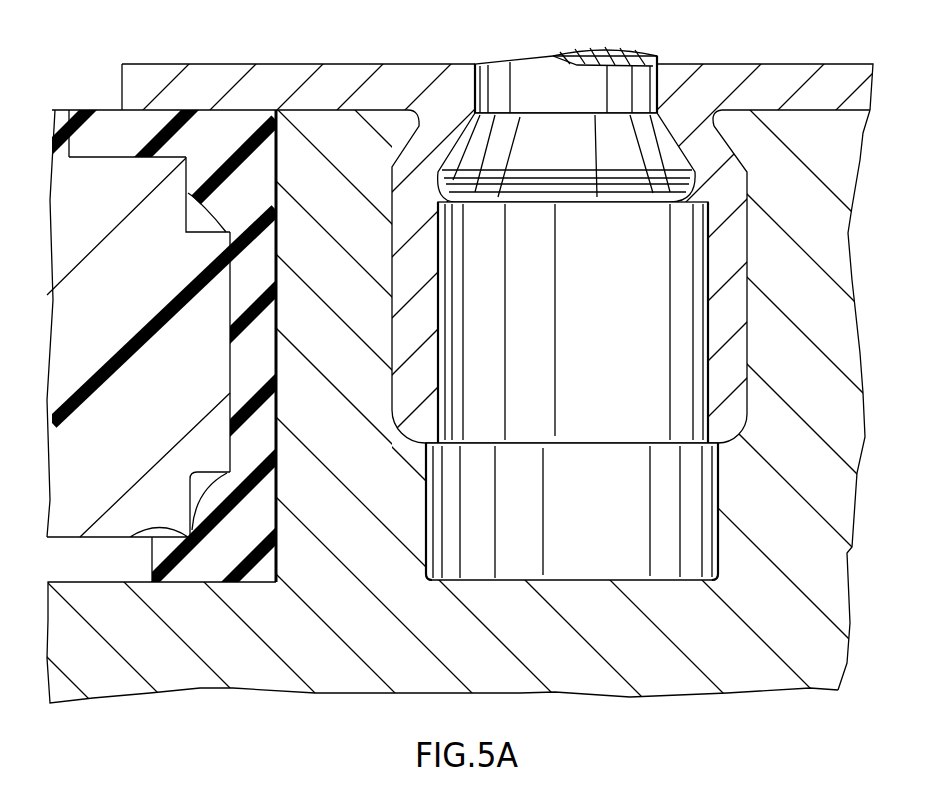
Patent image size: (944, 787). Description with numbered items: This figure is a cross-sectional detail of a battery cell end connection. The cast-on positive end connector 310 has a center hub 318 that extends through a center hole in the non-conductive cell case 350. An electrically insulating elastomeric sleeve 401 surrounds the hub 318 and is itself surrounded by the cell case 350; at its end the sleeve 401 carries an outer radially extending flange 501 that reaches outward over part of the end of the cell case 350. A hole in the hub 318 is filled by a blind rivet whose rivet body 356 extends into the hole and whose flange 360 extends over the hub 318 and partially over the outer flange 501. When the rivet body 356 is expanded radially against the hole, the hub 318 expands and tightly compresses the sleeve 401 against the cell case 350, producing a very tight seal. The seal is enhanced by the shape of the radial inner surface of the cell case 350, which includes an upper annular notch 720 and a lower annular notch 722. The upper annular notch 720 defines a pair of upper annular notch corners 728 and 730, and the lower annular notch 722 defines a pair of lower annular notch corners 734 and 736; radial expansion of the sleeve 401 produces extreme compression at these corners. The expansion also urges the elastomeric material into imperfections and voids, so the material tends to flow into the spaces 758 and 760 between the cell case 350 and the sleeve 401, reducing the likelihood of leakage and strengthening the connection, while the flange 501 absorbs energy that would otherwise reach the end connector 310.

The cast-on positive end connector 310 is at (330, 672).
The center hub 318 is at (350, 359).
The cell case 350 is at (62, 338).
The rivet body 356 is at (423, 187).
The flange 360 is at (345, 83).
The elastomeric sleeve 401 is at (245, 363).
The outer radially extending flange 501 is at (85, 125).
The upper annular notch 720 is at (190, 199).
The lower annular notch 722 is at (190, 503).
The upper annular notch corner 728 is at (186, 160).
The upper annular notch corner 730 is at (227, 238).
The lower annular notch corner 734 is at (229, 470).
The lower annular notch corner 736 is at (132, 538).
The space 758 is at (196, 224).
The space 760 is at (202, 488).